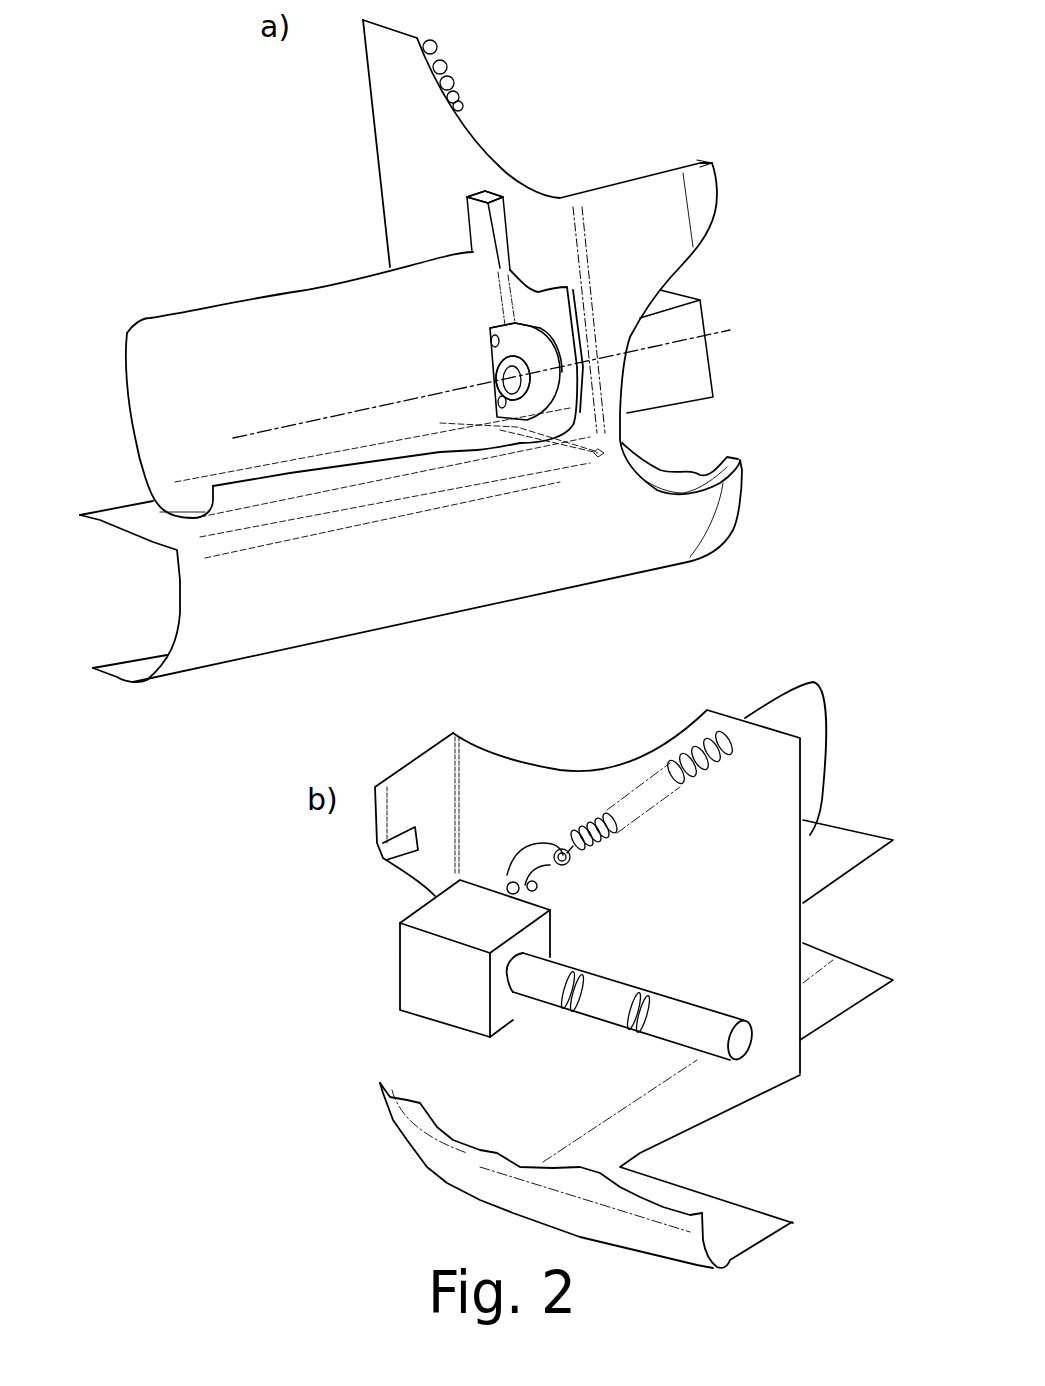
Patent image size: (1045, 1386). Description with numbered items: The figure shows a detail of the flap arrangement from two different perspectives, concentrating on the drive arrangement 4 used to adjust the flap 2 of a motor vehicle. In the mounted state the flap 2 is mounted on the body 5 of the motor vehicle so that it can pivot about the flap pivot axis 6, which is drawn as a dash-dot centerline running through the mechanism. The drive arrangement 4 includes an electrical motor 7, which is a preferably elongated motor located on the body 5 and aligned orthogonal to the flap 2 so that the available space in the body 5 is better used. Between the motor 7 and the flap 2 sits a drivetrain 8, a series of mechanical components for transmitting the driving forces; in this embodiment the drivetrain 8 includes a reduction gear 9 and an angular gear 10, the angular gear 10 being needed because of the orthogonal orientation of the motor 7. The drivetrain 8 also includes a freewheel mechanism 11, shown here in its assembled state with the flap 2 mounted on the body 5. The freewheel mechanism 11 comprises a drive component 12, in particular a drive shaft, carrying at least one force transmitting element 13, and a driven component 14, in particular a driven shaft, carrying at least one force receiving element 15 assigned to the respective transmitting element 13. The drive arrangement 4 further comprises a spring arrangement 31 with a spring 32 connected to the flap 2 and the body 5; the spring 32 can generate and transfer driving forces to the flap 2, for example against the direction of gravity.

The flap 2 is at (170, 355).
The drive arrangement 4 is at (745, 134).
The body 5 is at (400, 108).
The flap pivot axis 6 is at (284, 427).
The electrical motor 7 is at (700, 1043).
The drivetrain 8 is at (687, 446).
The reduction gear 9 is at (597, 1008).
The angular gear 10 is at (698, 316).
The freewheel mechanism 11 is at (479, 352).
The drive component 12 is at (500, 383).
The force transmitting element 13 is at (500, 383).
The driven component 14 is at (507, 322).
The force receiving element 15 is at (507, 322).
The spring arrangement 31 is at (565, 797).
The spring 32 is at (450, 74).